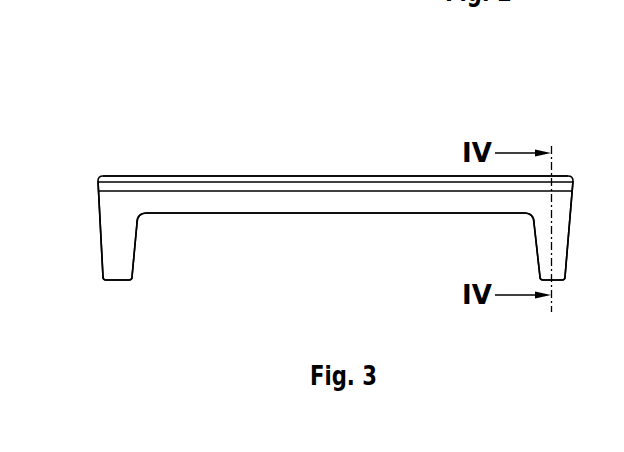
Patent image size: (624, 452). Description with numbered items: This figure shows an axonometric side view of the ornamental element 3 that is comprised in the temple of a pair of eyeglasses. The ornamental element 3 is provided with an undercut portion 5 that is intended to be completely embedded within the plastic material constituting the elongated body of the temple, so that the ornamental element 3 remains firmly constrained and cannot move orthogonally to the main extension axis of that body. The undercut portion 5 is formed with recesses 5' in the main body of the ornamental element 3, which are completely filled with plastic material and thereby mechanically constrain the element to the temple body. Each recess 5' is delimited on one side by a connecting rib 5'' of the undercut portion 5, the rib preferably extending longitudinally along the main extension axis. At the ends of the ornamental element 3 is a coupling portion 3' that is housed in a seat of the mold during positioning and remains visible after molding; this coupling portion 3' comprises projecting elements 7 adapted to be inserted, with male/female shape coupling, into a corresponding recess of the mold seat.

The ornamental element 3 is at (316, 140).
The coupling portion 3' is at (335, 277).
The undercut portion 5 is at (335, 137).
The recess 5' is at (335, 147).
The connecting rib 5'' is at (335, 125).
The projecting element 7 is at (117, 259).